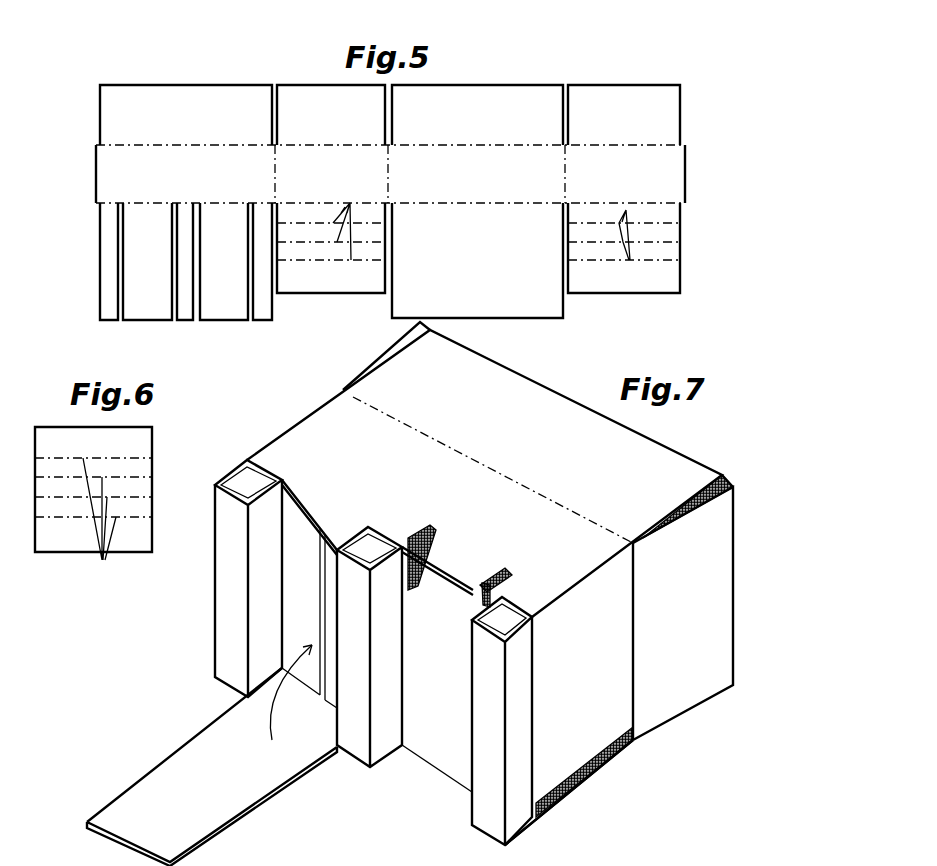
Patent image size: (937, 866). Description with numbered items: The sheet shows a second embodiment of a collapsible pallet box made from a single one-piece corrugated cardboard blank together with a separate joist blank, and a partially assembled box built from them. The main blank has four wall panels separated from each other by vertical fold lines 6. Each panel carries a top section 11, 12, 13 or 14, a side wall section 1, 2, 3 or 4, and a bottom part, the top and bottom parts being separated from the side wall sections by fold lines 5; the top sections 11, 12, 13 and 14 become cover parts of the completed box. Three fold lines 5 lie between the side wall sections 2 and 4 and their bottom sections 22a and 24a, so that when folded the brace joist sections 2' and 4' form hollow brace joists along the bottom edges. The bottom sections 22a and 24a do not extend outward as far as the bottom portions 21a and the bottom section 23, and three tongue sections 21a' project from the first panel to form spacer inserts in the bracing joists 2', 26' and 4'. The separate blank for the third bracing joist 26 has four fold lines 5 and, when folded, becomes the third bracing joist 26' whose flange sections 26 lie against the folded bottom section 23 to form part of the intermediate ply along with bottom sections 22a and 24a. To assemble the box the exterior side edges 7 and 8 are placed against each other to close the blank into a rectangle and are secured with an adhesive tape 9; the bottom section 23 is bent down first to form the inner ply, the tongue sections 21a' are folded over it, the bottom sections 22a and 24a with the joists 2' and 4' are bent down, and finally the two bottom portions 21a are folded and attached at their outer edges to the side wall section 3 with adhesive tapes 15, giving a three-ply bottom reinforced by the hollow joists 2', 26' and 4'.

In FIG. 5, the side wall section 1 is at (190, 182).
In FIG. 5, the side wall section 2 is at (332, 172).
In FIG. 5, the side wall section 3 is at (475, 182).
In FIG. 7, the side wall section 3 is at (453, 501).
In FIG. 5, the side wall section 4 is at (624, 172).
In FIG. 7, the side wall section 4 is at (569, 694).
In FIG. 5, the fold line 5 is at (503, 146).
In FIG. 6, the fold line 5 is at (99, 520).
In FIG. 5, the fold line 6 is at (272, 156).
In FIG. 5, the exterior side edge 7 is at (96, 175).
In FIG. 5, the exterior side edge 8 is at (685, 175).
In FIG. 7, the adhesive tape 9 is at (600, 762).
In FIG. 5, the top section 11 is at (194, 125).
In FIG. 5, the top section 12 is at (345, 125).
In FIG. 7, the top section 12 is at (395, 350).
In FIG. 5, the top section 13 is at (480, 125).
In FIG. 7, the top section 13 is at (549, 441).
In FIG. 5, the top section 14 is at (634, 125).
In FIG. 7, the top section 14 is at (695, 619).
In FIG. 7, the adhesive tape 15 is at (432, 532).
In FIG. 5, the bottom portion 21a is at (186, 261).
In FIG. 7, the bottom portion 21a is at (273, 755).
In FIG. 5, the tongue section 21a' is at (184, 277).
In FIG. 7, the tongue section 21a' is at (425, 532).
In FIG. 5, the bottom section 22a is at (359, 282).
In FIG. 7, the bottom section 22a is at (321, 586).
In FIG. 5, the bottom section 23 is at (490, 271).
In FIG. 5, the bottom section 24a is at (646, 286).
In FIG. 7, the bottom section 24a is at (484, 580).
In FIG. 5, the brace joist section 2' is at (353, 236).
In FIG. 7, the brace joist section 2' is at (231, 561).
In FIG. 5, the brace joist section 4' is at (641, 228).
In FIG. 7, the brace joist section 4' is at (499, 721).
In FIG. 6, the third bracing joist blank 26 is at (91, 487).
In FIG. 7, the third bracing joist blank 26 is at (406, 636).
In FIG. 6, the folded third bracing joist 26' is at (113, 482).
In FIG. 7, the folded third bracing joist 26' is at (350, 651).